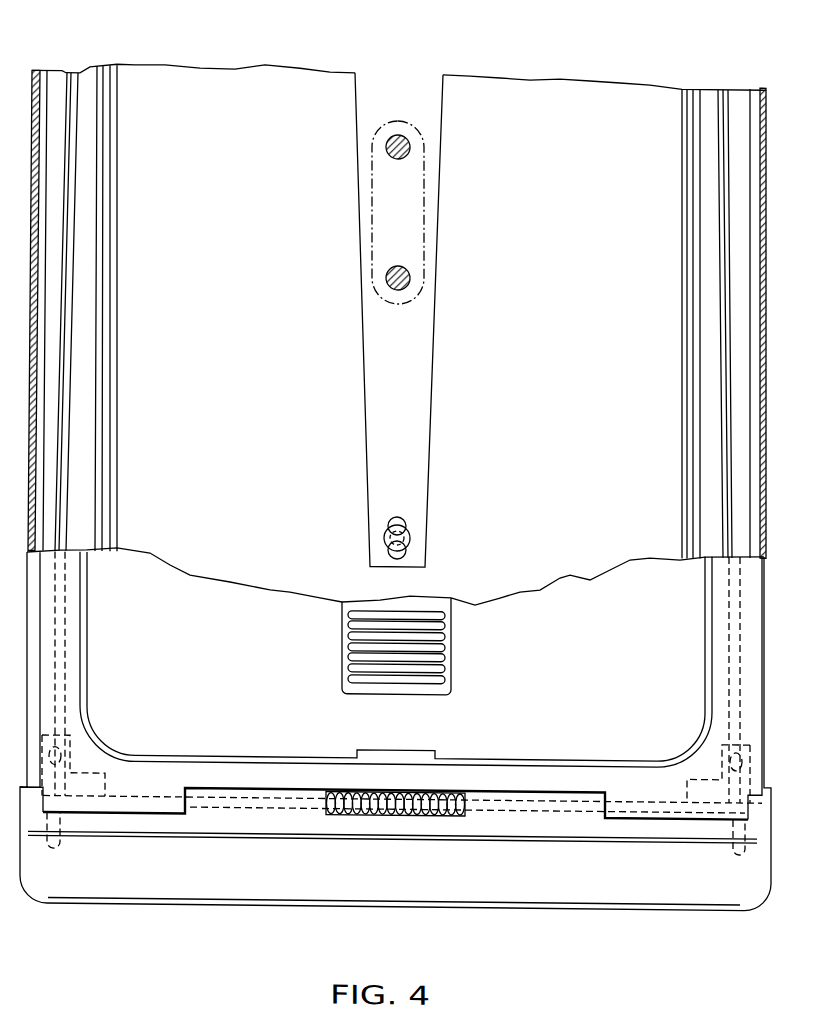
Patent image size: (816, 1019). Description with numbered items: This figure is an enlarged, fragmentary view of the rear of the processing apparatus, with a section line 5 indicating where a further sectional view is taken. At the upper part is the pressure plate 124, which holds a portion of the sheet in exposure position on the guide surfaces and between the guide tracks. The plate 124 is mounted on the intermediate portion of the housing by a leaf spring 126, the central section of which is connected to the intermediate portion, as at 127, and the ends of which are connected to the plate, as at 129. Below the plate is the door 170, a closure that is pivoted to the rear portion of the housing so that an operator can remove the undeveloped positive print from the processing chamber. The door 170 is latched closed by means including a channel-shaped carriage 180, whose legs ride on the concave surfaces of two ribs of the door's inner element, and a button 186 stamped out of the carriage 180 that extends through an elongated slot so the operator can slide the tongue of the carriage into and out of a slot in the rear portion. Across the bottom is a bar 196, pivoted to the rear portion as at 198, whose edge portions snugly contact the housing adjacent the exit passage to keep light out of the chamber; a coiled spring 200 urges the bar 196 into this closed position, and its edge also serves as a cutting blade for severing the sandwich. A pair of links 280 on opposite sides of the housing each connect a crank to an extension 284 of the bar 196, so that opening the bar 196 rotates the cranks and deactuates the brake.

The section line 5- 5 is at (398, 81).
The pressure plate 124 is at (270, 346).
The leaf spring 126 is at (435, 345).
The connection of leaf spring central section 127 is at (410, 143).
The connection of leaf spring ends 129 is at (410, 535).
The door 170 is at (246, 644).
The channel-shaped carriage 180 is at (355, 596).
The button 186 is at (445, 635).
The bar 196 is at (173, 886).
The pivot of bar 198 is at (566, 794).
The coiled spring 200 is at (428, 810).
The links 280 is at (72, 227).
The extension of bar 284 is at (66, 739).